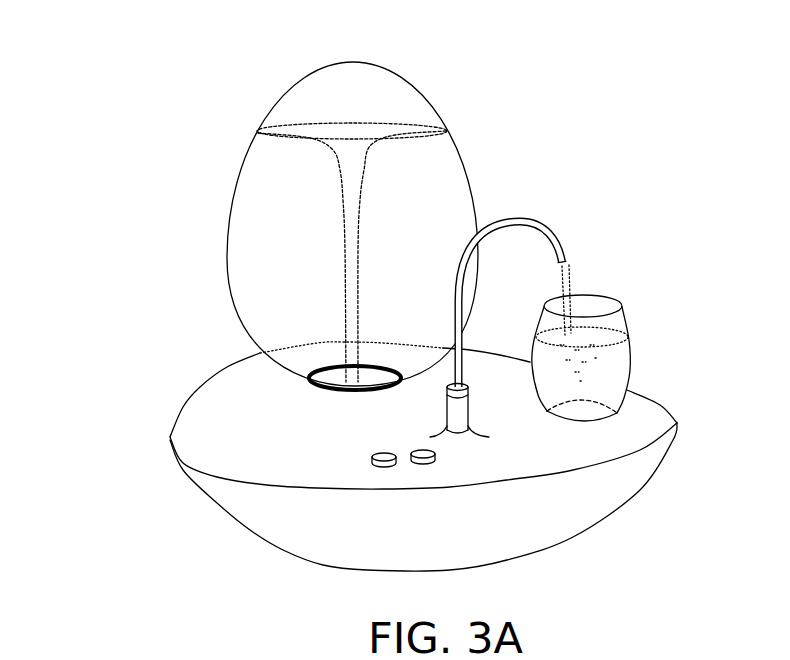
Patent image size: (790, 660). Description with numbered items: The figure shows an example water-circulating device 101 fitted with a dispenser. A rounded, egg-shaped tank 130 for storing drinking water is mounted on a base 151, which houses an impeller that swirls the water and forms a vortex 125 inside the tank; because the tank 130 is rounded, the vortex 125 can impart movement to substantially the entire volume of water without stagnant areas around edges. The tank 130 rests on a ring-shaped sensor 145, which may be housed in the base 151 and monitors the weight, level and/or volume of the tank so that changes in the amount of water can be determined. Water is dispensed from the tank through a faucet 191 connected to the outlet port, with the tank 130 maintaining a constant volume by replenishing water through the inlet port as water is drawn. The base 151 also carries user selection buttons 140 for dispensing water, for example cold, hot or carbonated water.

The device 101 is at (374, 287).
The vortex 125 is at (328, 133).
The tank 130 is at (245, 245).
The sensor 145 is at (308, 378).
The base 151 is at (232, 397).
The faucet 191 is at (543, 220).
The user selection buttons 140 is at (433, 463).